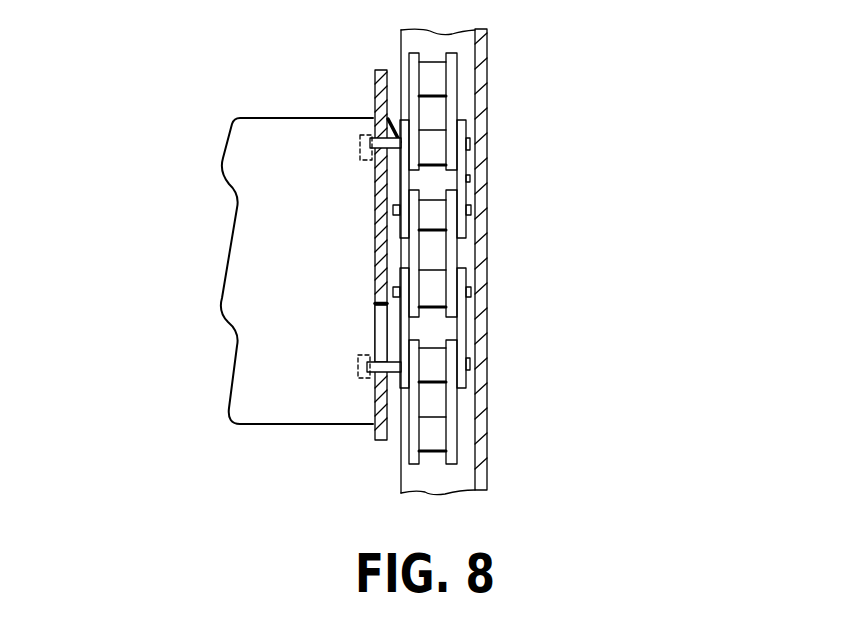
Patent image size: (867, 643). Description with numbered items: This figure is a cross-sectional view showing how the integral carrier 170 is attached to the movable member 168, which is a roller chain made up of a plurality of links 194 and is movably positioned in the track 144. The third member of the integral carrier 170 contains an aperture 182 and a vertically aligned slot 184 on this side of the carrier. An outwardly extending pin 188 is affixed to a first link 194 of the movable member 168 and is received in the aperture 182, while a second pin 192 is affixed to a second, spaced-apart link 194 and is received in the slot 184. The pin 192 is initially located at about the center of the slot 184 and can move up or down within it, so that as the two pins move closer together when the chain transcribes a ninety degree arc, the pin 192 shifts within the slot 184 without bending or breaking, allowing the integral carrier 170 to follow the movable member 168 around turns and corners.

The integral carrier 170 is at (180, 122).
The track 144 is at (488, 70).
The aperture 182 is at (381, 158).
The slot 184 is at (378, 321).
The pin 188 is at (378, 138).
The pin 192 is at (382, 382).
The link 194 is at (470, 128).
The movable member 168 is at (486, 166).